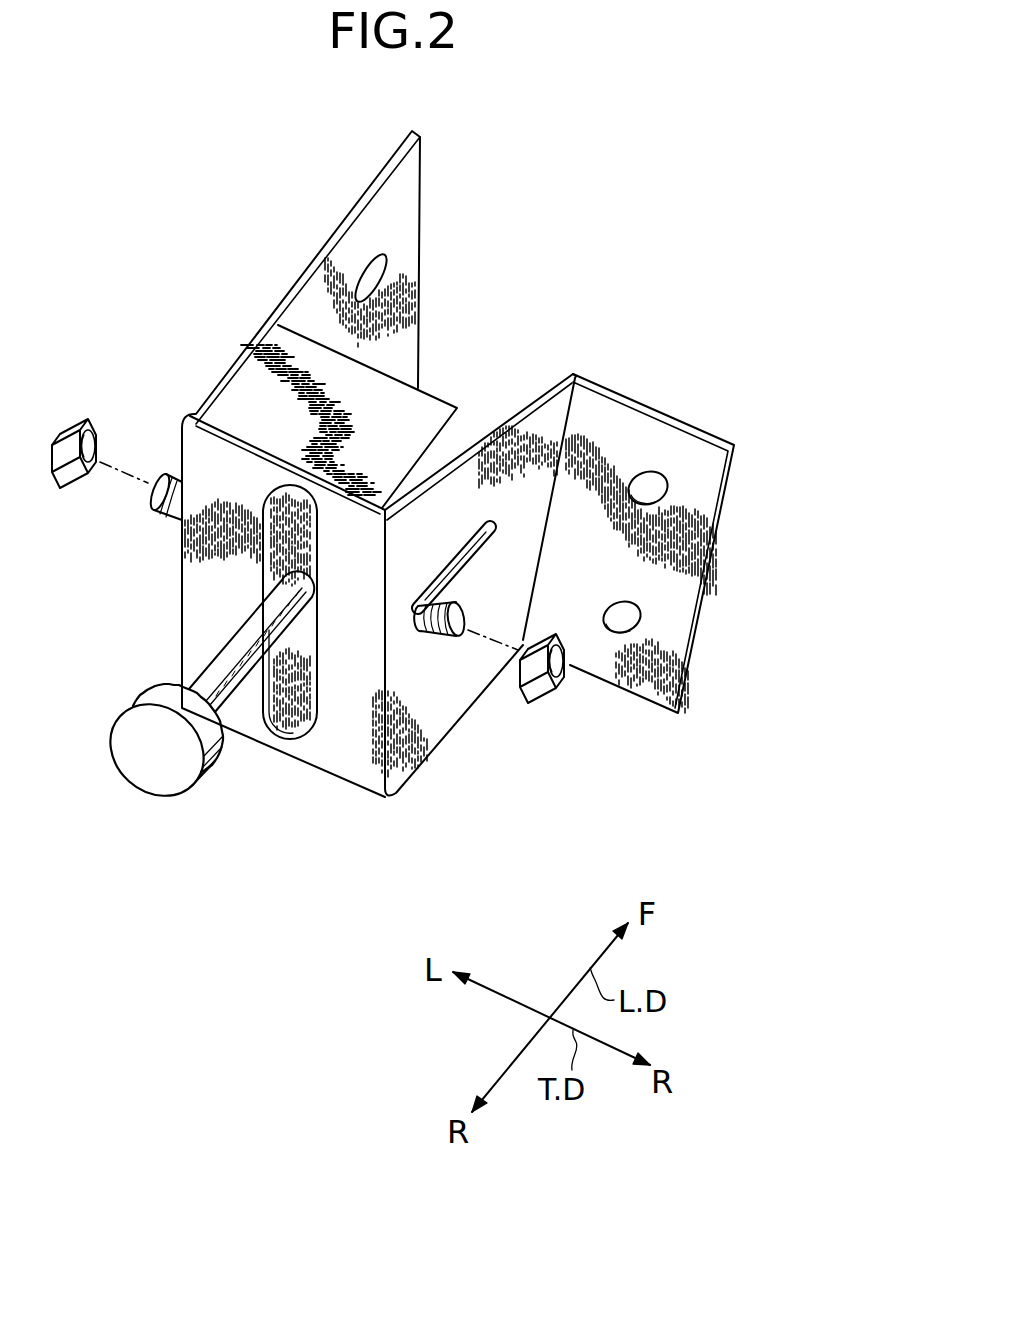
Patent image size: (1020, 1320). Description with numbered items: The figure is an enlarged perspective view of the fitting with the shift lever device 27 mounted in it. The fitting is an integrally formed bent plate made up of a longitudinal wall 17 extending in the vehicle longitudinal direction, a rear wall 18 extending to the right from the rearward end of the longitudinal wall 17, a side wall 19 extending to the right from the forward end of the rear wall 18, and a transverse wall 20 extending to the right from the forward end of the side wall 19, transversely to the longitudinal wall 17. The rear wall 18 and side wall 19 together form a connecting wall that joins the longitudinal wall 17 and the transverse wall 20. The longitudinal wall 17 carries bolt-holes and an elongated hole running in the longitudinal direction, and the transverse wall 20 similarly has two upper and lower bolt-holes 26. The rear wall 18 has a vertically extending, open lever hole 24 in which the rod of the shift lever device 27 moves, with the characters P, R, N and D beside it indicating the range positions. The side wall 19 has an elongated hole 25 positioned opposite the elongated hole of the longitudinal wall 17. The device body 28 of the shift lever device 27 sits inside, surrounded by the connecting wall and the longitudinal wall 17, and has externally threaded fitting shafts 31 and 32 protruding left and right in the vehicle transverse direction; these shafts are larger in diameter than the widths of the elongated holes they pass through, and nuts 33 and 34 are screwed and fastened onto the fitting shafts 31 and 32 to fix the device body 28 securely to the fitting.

The longitudinal wall 17 is at (376, 218).
The rear wall 18 is at (348, 765).
The side wall 19 is at (423, 753).
The transverse wall 20 is at (645, 438).
The lever hole 24 is at (262, 561).
The elongated hole 25 is at (493, 541).
The mounting holes 26 is at (652, 492).
The shift lever device 27 is at (168, 797).
The device body 28 is at (272, 350).
The fitting shaft 31 is at (422, 638).
The fitting shaft 32 is at (170, 473).
The nut 33 is at (528, 704).
The nut 34 is at (93, 415).